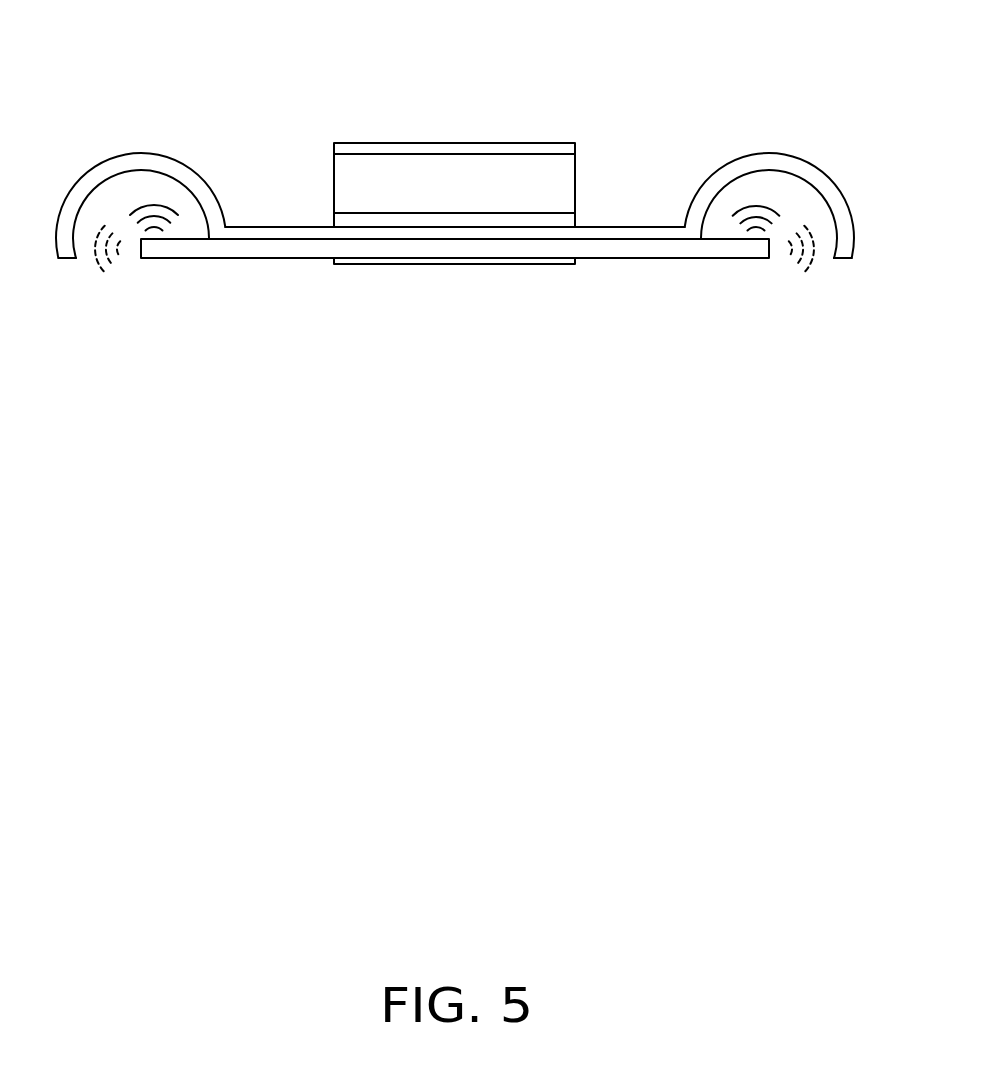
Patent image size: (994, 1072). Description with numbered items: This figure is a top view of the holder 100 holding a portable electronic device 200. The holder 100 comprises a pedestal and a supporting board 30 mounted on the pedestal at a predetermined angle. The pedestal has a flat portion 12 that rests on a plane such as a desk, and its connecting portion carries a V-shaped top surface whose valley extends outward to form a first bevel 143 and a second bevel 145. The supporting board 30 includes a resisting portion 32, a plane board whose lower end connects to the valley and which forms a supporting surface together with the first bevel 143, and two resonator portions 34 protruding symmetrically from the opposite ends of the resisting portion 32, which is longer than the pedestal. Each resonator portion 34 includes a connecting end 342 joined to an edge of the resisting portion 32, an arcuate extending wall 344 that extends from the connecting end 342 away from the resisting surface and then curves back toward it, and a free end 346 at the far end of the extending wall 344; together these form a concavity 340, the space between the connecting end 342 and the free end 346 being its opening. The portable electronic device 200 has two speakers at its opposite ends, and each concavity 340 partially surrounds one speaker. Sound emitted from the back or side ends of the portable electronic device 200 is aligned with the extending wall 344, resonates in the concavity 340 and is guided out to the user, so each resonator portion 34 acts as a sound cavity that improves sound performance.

The holder 100 is at (479, 78).
The flat portion 12 is at (486, 202).
The first bevel 143 is at (353, 262).
The second bevel 145 is at (568, 222).
The portable electronic device 200 is at (638, 245).
The supporting board 30 is at (298, 90).
The resisting portion 32 is at (265, 232).
The resonator portion 34 is at (180, 165).
The concavity 340 is at (795, 198).
The connecting end 342 is at (685, 228).
The extending wall 344 is at (770, 158).
The free end 346 is at (842, 259).